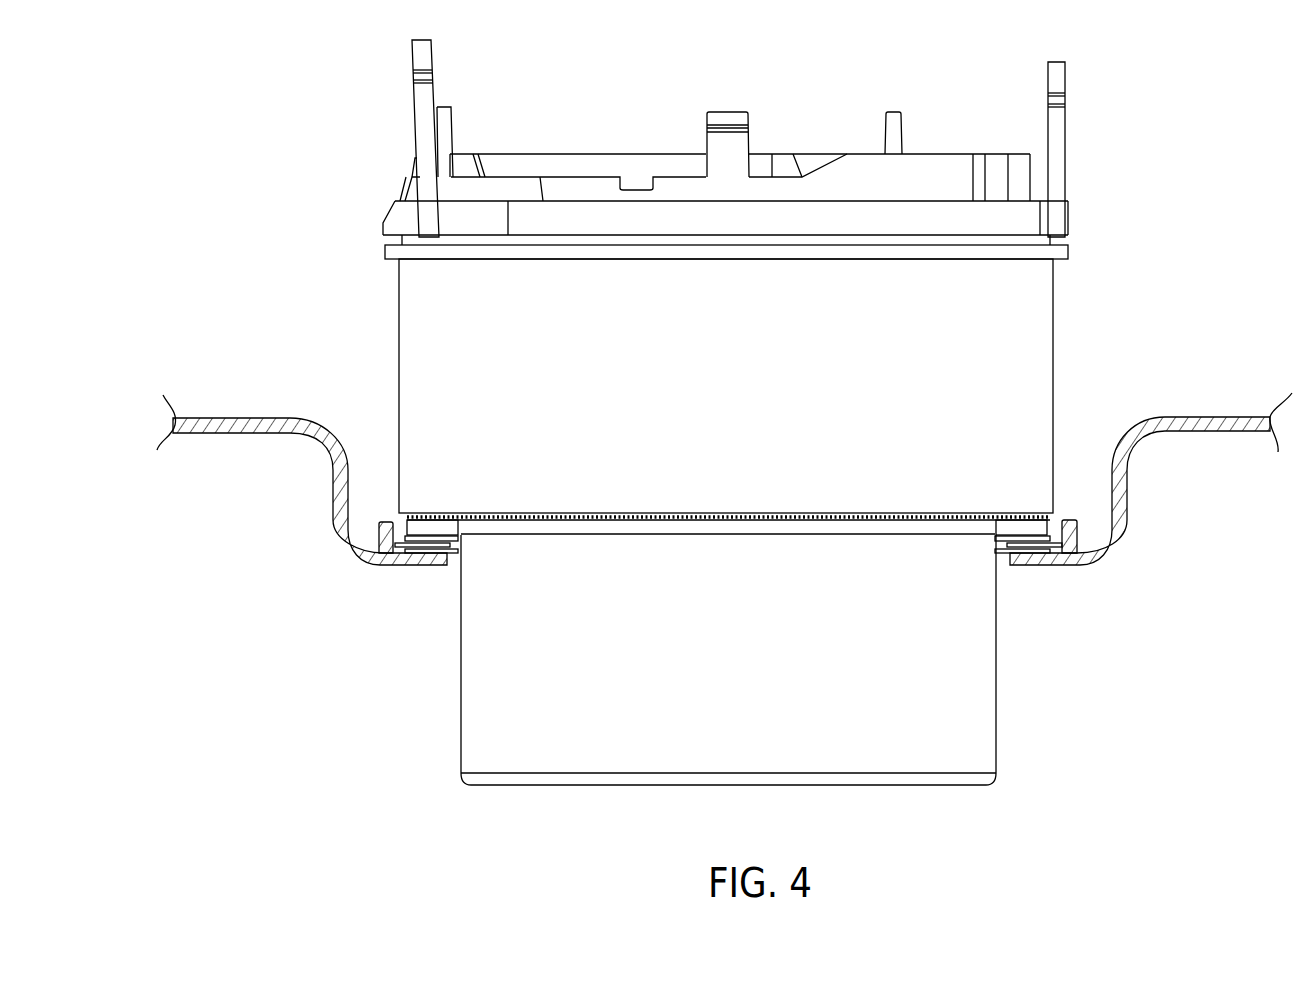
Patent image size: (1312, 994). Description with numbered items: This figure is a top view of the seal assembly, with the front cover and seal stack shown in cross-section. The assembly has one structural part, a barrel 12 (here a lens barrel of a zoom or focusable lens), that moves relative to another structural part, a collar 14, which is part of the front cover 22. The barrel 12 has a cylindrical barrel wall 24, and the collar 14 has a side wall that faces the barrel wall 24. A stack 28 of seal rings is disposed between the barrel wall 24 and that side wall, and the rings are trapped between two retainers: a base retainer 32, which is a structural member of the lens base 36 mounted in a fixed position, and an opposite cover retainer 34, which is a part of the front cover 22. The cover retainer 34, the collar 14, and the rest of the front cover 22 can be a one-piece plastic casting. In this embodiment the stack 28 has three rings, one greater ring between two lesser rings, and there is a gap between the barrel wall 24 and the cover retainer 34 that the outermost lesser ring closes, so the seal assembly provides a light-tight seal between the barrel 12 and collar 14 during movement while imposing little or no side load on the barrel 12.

The barrel 12 is at (910, 780).
The collar 14 is at (388, 522).
The front cover 22 is at (198, 417).
The barrel wall 24 is at (460, 713).
The stack 28 is at (440, 534).
The base retainer 32 is at (418, 527).
The cover retainer 34 is at (400, 575).
The lens base 36 is at (398, 293).